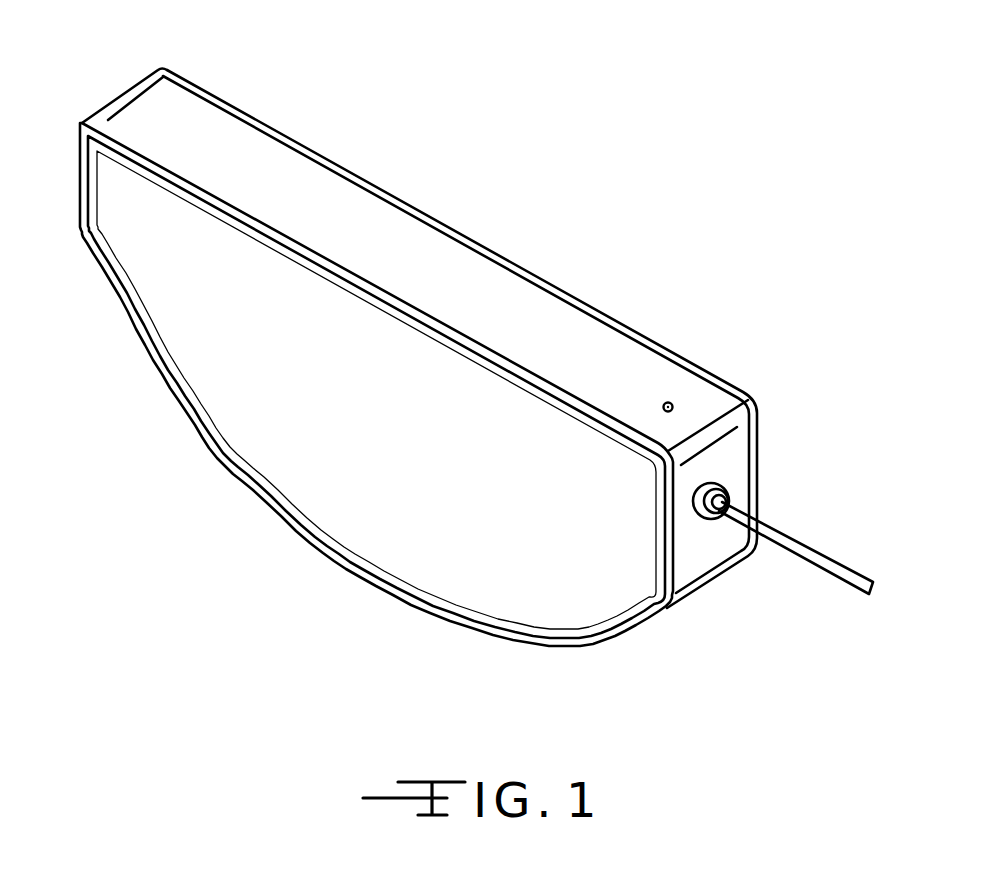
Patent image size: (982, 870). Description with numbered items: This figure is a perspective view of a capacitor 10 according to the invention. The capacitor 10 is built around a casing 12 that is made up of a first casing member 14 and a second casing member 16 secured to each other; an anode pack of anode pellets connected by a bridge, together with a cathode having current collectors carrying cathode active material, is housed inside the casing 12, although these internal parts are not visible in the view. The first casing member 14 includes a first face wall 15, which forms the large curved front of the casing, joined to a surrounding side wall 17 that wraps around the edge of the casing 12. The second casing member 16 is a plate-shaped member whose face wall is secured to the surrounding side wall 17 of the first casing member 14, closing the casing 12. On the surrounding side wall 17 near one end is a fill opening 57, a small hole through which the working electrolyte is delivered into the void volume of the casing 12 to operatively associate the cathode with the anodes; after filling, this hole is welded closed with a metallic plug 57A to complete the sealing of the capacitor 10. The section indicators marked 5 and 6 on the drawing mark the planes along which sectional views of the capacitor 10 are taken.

The capacitor 10 is at (493, 163).
The casing 12 is at (113, 92).
The first casing member 14 is at (310, 540).
The first face wall 15 is at (217, 348).
The second casing member 16 is at (370, 182).
The surrounding side wall 17 is at (707, 547).
The fill opening 57 is at (668, 400).
The metallic plug 57A is at (678, 406).
The section line 5- 5 is at (147, 63).
The section line 6- 6 is at (668, 282).